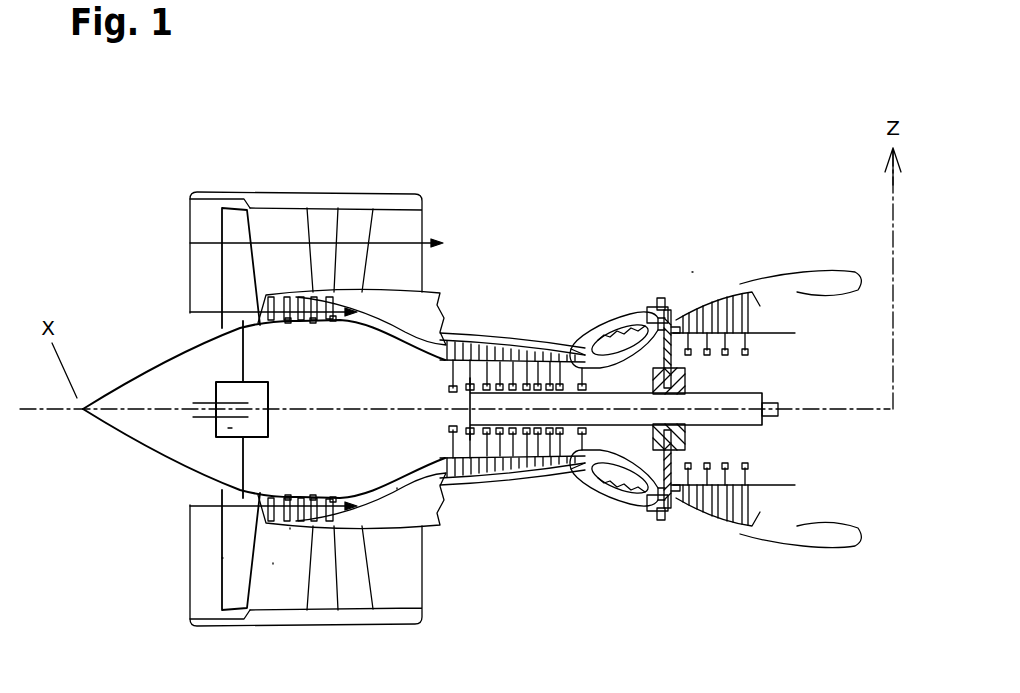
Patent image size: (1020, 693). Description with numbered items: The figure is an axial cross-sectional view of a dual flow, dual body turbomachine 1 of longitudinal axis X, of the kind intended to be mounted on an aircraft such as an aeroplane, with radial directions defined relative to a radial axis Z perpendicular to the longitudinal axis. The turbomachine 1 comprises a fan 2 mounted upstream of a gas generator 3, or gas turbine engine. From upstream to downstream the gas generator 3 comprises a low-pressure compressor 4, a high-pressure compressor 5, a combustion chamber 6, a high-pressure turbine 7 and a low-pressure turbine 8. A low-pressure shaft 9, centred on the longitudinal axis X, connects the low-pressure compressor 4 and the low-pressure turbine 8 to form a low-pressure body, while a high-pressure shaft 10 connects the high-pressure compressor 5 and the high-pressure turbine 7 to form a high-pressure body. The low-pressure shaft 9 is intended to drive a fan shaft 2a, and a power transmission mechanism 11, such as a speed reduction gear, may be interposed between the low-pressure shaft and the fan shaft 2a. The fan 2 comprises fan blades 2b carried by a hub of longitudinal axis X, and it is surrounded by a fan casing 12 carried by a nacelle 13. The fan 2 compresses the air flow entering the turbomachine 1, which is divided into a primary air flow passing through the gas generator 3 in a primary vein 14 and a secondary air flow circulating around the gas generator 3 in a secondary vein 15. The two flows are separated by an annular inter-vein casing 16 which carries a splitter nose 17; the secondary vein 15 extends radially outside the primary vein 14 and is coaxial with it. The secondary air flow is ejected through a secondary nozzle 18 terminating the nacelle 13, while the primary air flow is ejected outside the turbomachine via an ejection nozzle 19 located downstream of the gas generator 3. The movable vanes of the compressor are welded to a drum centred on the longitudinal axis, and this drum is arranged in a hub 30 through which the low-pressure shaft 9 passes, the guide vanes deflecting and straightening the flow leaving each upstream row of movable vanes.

The turbomachine 1 is at (694, 262).
The fan 2 is at (218, 268).
The fan shaft 2a is at (198, 402).
The fan blades 2b is at (222, 558).
The gas generator 3 is at (489, 327).
The low-pressure compressor 4 is at (311, 297).
The high-pressure compressor 5 is at (460, 487).
The combustion chamber 6 is at (601, 345).
The high-pressure turbine 7 is at (677, 495).
The low-pressure turbine 8 is at (727, 300).
The low-pressure shaft 9 is at (293, 414).
The high-pressure shaft 10 is at (600, 430).
The power transmission mechanism 11 is at (232, 428).
The fan casing 12 is at (204, 198).
The nacelle 13 is at (273, 205).
The primary vein 14 is at (397, 488).
The secondary vein 15 is at (273, 563).
The inter-vein casing 16 is at (405, 290).
The splitter nose 17 is at (290, 528).
The secondary nozzle 18 is at (401, 200).
The ejection nozzle 19 is at (817, 532).
The hub 30 is at (140, 430).